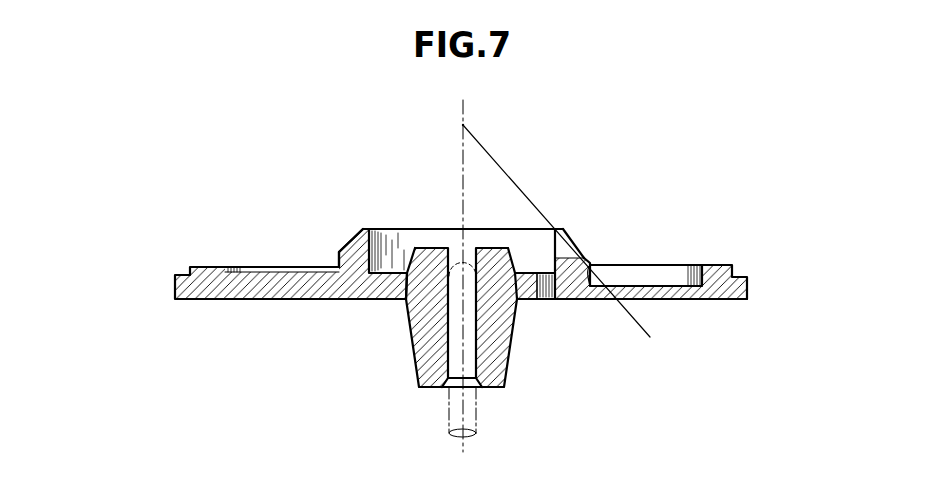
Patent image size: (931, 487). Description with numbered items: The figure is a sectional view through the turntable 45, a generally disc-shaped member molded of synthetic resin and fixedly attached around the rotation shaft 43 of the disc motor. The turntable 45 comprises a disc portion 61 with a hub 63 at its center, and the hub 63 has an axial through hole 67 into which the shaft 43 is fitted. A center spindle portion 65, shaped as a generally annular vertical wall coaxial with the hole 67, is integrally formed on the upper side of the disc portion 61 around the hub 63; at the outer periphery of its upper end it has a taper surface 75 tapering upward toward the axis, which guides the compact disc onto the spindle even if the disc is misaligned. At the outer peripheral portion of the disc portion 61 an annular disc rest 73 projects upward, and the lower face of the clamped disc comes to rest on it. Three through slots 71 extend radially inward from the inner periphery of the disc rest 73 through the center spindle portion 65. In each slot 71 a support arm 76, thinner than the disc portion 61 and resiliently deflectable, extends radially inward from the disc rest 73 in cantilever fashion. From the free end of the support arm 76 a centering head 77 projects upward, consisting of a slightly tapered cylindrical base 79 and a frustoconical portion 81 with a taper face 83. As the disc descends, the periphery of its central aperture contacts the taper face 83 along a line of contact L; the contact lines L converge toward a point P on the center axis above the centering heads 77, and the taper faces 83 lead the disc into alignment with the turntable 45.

The rotation shaft 43 is at (447, 418).
The turntable 45 is at (586, 218).
The disc portion 61 is at (255, 278).
The hub 63 is at (508, 348).
The center spindle portion 65 is at (333, 247).
The axial through hole 67 is at (450, 328).
The through slot 71 is at (666, 276).
The annular disc rest 73 is at (720, 273).
The taper surface 75 is at (355, 232).
The support arm 76 is at (678, 309).
The centering head 77 is at (616, 261).
The cylindrical base 79 is at (596, 294).
The frustoconical portion 81 is at (568, 228).
The taper face 83 is at (589, 262).
The point on the center axis P is at (463, 125).
The line of contact L is at (512, 178).